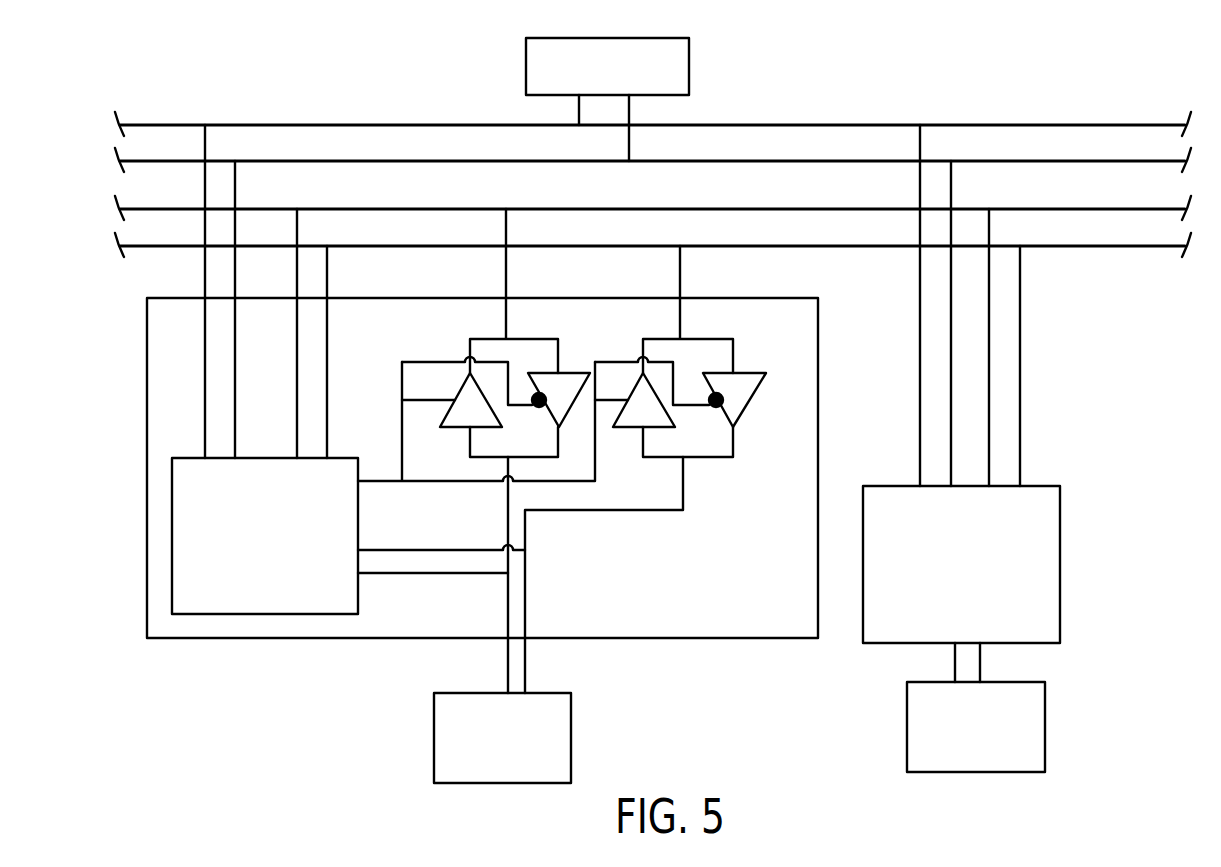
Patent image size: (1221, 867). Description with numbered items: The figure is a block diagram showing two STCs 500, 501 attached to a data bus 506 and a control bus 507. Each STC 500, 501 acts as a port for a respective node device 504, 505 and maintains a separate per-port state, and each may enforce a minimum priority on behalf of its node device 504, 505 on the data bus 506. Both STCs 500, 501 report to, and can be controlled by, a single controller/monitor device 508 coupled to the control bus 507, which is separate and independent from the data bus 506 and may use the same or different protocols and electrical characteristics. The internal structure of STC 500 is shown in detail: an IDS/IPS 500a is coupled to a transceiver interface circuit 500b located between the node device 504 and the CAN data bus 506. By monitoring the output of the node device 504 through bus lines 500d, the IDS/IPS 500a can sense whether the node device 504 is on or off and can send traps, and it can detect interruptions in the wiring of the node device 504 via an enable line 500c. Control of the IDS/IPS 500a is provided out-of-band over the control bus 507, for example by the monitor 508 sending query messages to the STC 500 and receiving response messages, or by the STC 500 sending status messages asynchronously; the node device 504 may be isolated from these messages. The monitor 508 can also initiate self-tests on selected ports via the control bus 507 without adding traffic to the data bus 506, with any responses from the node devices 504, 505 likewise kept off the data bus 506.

The STC 500 is at (732, 638).
The IDS/IPS 500a is at (268, 614).
The transceiver interface circuit 500b is at (638, 535).
The enable line 500c is at (417, 481).
The bus lines 500d is at (393, 550).
The STC 501 is at (1060, 565).
The node device 504 is at (571, 738).
The node device 505 is at (1045, 732).
The data bus 506 is at (847, 209).
The control bus 507 is at (827, 120).
The controller/monitor device 508 is at (526, 70).